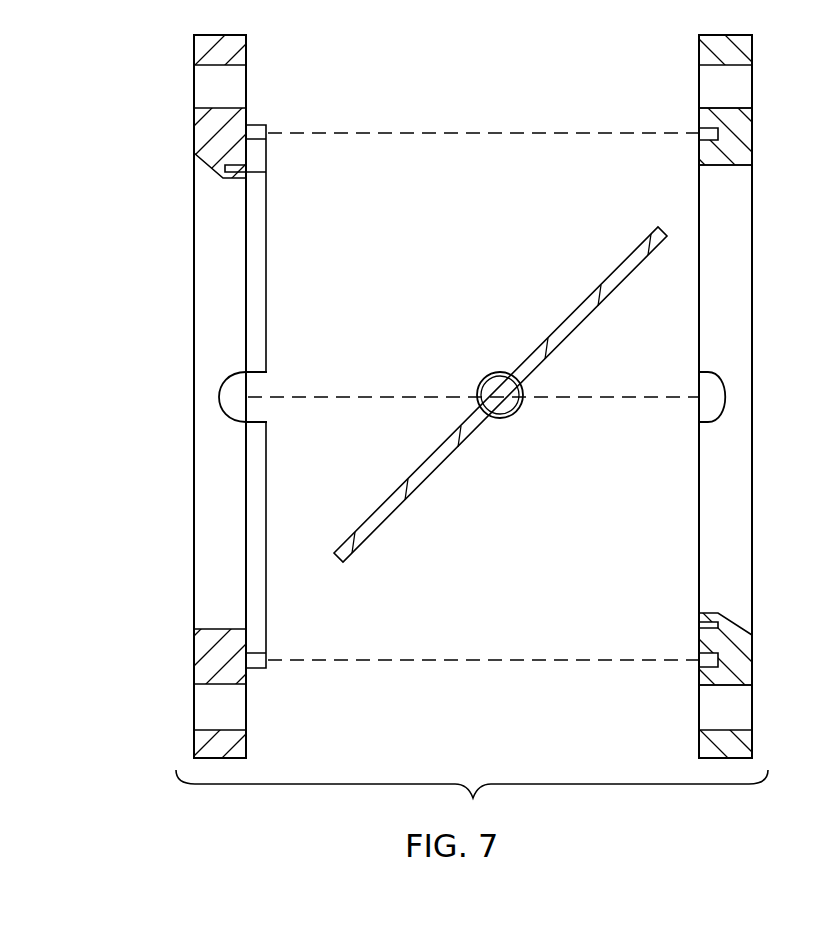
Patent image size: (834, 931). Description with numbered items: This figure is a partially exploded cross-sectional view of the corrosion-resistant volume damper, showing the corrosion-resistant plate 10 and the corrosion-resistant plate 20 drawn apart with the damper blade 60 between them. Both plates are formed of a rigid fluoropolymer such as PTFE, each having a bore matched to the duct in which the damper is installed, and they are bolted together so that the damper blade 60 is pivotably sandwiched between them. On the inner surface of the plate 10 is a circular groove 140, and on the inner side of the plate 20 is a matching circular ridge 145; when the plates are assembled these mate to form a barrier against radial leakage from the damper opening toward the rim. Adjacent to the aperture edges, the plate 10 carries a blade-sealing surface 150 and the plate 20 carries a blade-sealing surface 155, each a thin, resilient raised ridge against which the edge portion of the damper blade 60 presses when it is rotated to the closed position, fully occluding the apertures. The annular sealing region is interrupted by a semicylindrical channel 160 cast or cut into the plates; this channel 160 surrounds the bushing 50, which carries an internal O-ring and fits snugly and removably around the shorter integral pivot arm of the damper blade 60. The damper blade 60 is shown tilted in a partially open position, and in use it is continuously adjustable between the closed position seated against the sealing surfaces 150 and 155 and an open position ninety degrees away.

The corrosion-resistant plate 10 is at (752, 50).
The corrosion-resistant plate 20 is at (194, 50).
The bushing 50 is at (487, 378).
The damper blade 60 is at (567, 342).
The circular groove 140 is at (716, 135).
The circular ridge 145 is at (258, 130).
The blade-sealing surface 150 is at (700, 620).
The blade-sealing surface 155 is at (227, 168).
The semicylindrical channel 160 is at (219, 402).